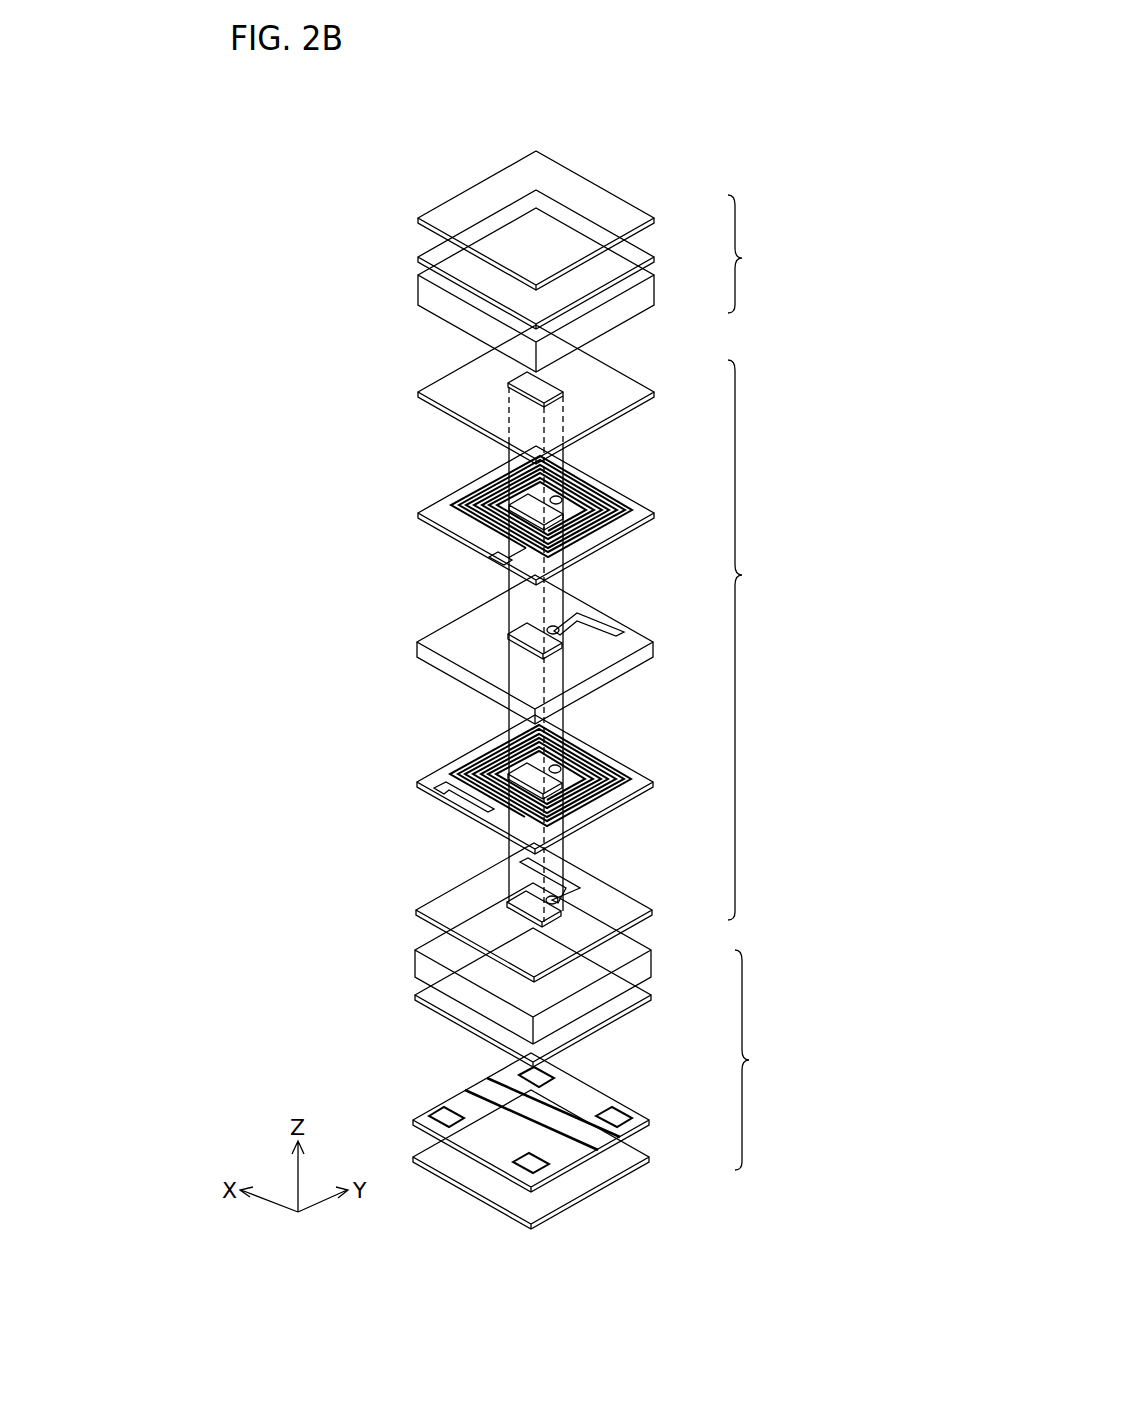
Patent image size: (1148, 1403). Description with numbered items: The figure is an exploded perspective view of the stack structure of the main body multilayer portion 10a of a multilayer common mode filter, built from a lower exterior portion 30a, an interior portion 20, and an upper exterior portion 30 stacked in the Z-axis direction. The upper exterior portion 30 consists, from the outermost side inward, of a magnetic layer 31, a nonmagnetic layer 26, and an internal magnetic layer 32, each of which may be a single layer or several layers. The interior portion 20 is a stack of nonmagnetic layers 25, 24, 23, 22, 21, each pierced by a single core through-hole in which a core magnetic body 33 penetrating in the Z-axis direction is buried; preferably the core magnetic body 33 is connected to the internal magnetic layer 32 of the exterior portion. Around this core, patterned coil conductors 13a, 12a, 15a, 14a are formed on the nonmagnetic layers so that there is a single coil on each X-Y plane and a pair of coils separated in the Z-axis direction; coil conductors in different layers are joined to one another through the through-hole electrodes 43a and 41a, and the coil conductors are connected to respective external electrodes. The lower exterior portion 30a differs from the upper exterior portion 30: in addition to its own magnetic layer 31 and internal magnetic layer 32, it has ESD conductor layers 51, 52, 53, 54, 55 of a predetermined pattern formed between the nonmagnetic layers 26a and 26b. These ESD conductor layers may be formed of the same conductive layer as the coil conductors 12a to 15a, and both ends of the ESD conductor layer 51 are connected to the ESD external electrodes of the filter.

The main body multilayer portion 10a is at (352, 277).
The upper exterior portion 30 is at (750, 254).
The magnetic layer 31 is at (648, 213).
The nonmagnetic layer 26 is at (648, 252).
The internal magnetic layer 32 is at (648, 292).
The interior portion 20 is at (750, 640).
The core magnetic body 33 is at (522, 380).
The nonmagnetic layer 25 is at (648, 387).
The coil conductor 13a is at (478, 483).
The nonmagnetic layer 24 is at (570, 504).
The through-hole electrode 43a is at (530, 618).
The coil conductor 12a is at (592, 624).
The nonmagnetic layer 23 is at (565, 640).
The coil conductor 15a is at (478, 752).
The nonmagnetic layer 22 is at (571, 772).
The coil conductor 14a is at (572, 882).
The through-hole electrode 41a is at (527, 891).
The nonmagnetic layer 21 is at (565, 898).
The nonmagnetic layer 26b is at (645, 990).
The lower exterior portion 30a is at (769, 1060).
The ESD conductor layer 51 is at (478, 1084).
The ESD conductor layer 54 is at (548, 1066).
The ESD conductor layer 52 is at (622, 1108).
The ESD conductor layer 55 is at (440, 1118).
The nonmagnetic layer 26a is at (565, 1127).
The ESD conductor layer 53 is at (545, 1188).